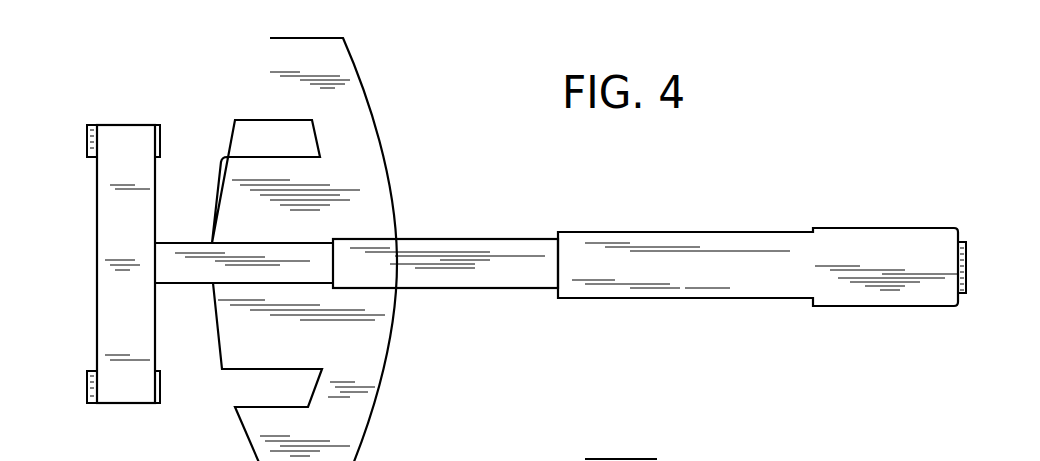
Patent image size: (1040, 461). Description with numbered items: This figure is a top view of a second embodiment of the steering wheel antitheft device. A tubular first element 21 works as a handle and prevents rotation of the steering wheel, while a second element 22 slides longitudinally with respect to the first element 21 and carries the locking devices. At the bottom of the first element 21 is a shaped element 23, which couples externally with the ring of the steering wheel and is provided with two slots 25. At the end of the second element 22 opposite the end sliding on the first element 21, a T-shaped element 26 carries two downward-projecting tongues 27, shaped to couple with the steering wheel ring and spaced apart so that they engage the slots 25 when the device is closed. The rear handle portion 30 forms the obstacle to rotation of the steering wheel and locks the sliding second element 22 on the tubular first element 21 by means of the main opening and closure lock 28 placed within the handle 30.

The first element 21 is at (508, 247).
The second element 22 is at (203, 272).
The shaped element 23 is at (360, 118).
The slots 25 is at (238, 124).
The T-shaped element 26 is at (110, 228).
The tongues 27 is at (94, 124).
The opening and closure lock 28 is at (966, 262).
The rear handle portion 30 is at (733, 245).